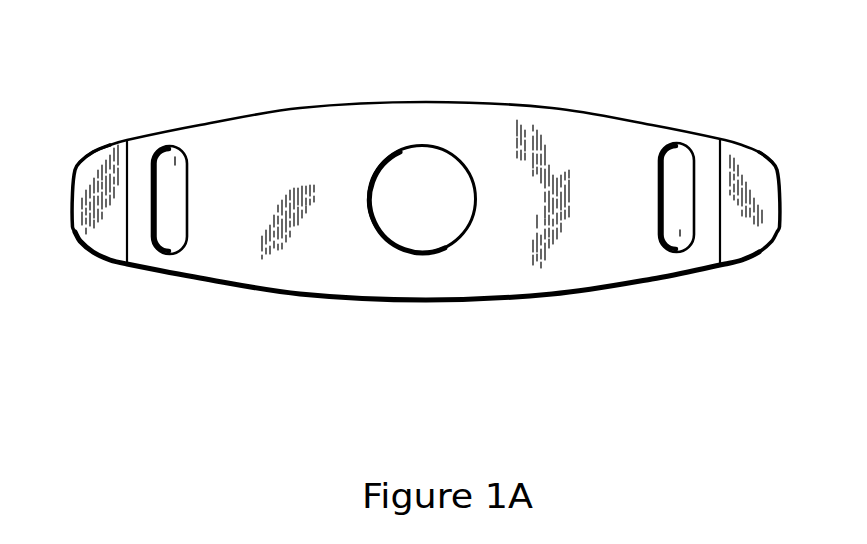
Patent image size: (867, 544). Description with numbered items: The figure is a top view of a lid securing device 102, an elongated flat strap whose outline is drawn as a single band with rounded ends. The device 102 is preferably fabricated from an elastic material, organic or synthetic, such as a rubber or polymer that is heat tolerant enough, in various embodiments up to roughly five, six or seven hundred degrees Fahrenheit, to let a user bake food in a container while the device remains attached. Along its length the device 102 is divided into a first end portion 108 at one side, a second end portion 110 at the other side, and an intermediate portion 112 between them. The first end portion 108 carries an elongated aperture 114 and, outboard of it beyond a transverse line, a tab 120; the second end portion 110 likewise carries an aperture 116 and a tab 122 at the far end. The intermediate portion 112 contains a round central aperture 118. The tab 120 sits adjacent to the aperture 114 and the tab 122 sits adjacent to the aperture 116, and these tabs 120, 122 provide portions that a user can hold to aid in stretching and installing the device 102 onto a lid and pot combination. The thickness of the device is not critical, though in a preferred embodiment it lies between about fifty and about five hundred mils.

The lid securing device 102 is at (566, 60).
The first end portion 108 is at (167, 133).
The second end portion 110 is at (672, 130).
The intermediate portion 112 is at (402, 115).
The aperture 114 is at (175, 157).
The aperture 116 is at (680, 230).
The aperture 118 is at (443, 233).
The tab 120 is at (82, 162).
The tab 122 is at (731, 147).